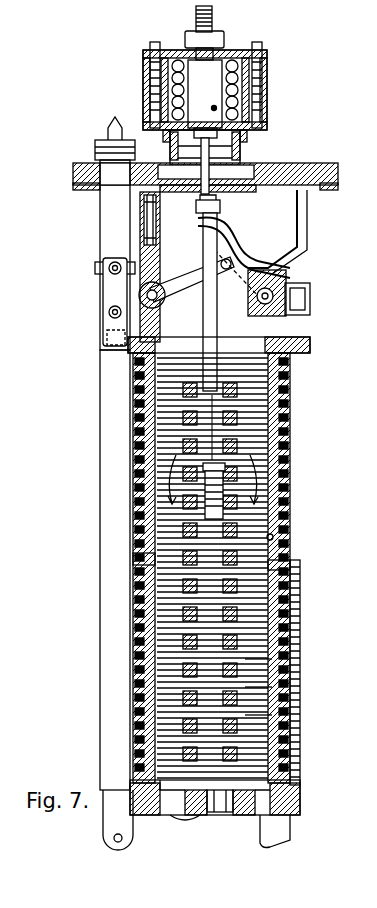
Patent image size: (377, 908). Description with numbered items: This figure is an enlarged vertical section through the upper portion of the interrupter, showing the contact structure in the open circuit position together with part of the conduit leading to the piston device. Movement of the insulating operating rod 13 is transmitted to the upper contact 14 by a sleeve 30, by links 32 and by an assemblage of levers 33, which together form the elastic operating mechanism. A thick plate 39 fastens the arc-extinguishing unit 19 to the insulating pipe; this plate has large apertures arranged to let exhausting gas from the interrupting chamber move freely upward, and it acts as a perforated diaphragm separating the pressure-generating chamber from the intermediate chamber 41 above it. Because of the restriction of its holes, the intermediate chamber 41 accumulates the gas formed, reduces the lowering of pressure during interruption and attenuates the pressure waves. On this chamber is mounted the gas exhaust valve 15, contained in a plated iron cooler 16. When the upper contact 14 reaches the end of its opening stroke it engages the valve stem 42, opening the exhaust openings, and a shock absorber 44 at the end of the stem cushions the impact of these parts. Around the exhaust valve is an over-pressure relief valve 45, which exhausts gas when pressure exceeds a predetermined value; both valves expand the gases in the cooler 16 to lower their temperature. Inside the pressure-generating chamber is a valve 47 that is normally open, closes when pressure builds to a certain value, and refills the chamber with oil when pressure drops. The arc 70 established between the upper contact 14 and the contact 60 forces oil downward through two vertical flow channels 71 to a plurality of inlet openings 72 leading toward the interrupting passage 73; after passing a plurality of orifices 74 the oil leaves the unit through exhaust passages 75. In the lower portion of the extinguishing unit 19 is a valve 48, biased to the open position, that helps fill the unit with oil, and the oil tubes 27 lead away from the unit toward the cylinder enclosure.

The insulating operating rod 13 is at (100, 521).
The upper contact 14 is at (211, 325).
The gas exhaust valve 15 is at (298, 96).
The cooler 16 is at (267, 59).
The arc-extinguishing unit 19 is at (88, 465).
The oil tubes 27 is at (292, 830).
The sleeve 30 is at (100, 238).
The links 32 is at (103, 298).
The assemblage of levers 33 is at (186, 277).
The plate 39 is at (285, 168).
The intermediate chamber 41 is at (178, 148).
The valve stem 42 is at (212, 193).
The shock absorber 44 is at (216, 78).
The over-pressure relief valve 45 is at (243, 134).
The valve 47 is at (160, 226).
The valve 48 is at (240, 815).
The contact 60 is at (247, 489).
The arc 70 is at (232, 428).
The vertical flow channels 71 is at (280, 542).
The inlet openings 72 is at (292, 614).
The interrupting passage 73 is at (272, 659).
The orifices 74 is at (272, 687).
The exhaust passages 75 is at (290, 722).